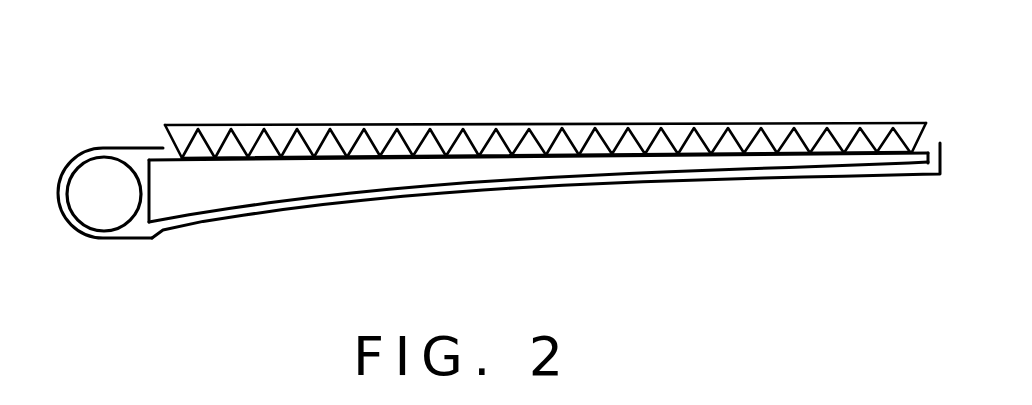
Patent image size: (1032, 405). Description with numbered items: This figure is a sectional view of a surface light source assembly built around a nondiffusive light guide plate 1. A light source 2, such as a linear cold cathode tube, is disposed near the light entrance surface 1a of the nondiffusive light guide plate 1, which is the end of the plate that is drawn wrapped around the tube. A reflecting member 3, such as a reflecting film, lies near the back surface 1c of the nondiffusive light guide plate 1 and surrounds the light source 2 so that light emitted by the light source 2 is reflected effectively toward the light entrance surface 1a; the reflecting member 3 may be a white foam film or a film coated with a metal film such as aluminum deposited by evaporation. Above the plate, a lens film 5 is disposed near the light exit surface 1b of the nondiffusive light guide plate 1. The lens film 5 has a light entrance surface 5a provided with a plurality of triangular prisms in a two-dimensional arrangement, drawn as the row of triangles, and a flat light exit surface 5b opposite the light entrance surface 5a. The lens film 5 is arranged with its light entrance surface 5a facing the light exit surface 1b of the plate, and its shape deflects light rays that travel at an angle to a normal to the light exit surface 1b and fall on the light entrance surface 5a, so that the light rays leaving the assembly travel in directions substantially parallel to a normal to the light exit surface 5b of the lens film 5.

The nondiffusive light guide plate 1 is at (538, 174).
The light entrance surface 1a is at (145, 170).
The light exit surface 1b is at (563, 150).
The back surface 1c is at (503, 180).
The light source 2 is at (88, 178).
The reflecting member 3 is at (618, 187).
The lens film 5 is at (543, 130).
The light entrance surface 5a is at (757, 153).
The light exit surface 5b is at (753, 122).